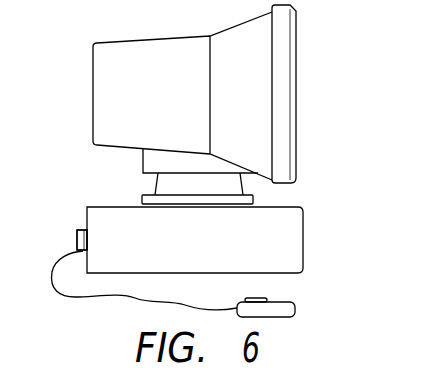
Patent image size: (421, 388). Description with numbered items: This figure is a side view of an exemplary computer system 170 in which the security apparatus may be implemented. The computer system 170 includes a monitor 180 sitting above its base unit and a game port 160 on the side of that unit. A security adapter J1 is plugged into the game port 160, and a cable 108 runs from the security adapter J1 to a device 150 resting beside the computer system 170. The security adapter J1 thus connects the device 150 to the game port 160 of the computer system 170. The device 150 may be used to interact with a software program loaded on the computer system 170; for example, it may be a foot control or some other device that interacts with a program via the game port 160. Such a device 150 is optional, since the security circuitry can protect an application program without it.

The monitor 180 is at (296, 95).
The computer system 170 is at (304, 240).
The game port 160 is at (87, 230).
The security adapter J1 is at (77, 238).
The cable 108 is at (75, 297).
The device 150 is at (295, 312).